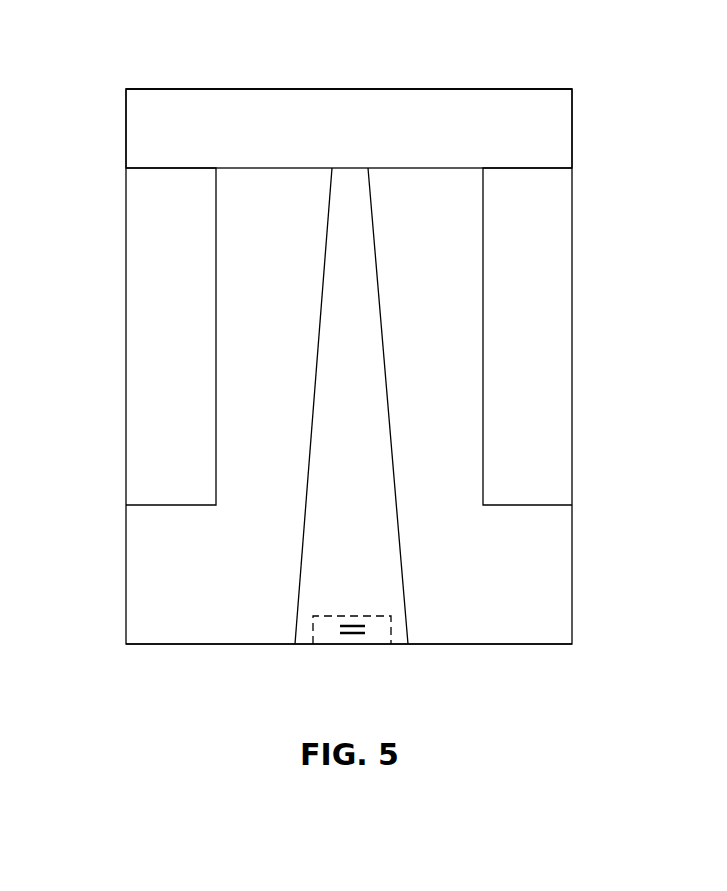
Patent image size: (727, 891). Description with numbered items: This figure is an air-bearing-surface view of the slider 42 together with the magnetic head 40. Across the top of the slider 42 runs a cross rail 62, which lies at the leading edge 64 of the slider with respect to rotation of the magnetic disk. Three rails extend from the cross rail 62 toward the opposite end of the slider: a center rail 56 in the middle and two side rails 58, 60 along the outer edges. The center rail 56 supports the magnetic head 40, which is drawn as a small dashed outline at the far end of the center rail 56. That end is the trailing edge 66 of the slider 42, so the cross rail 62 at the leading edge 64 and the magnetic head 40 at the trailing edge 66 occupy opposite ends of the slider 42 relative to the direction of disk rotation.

The slider 42 is at (127, 593).
The cross rail 62 is at (268, 100).
The leading edge 64 is at (449, 88).
The side rail 58 is at (143, 247).
The side rail 60 is at (556, 247).
The center rail 56 is at (336, 282).
The magnetic head 40 is at (331, 645).
The trailing edge 66 is at (475, 645).